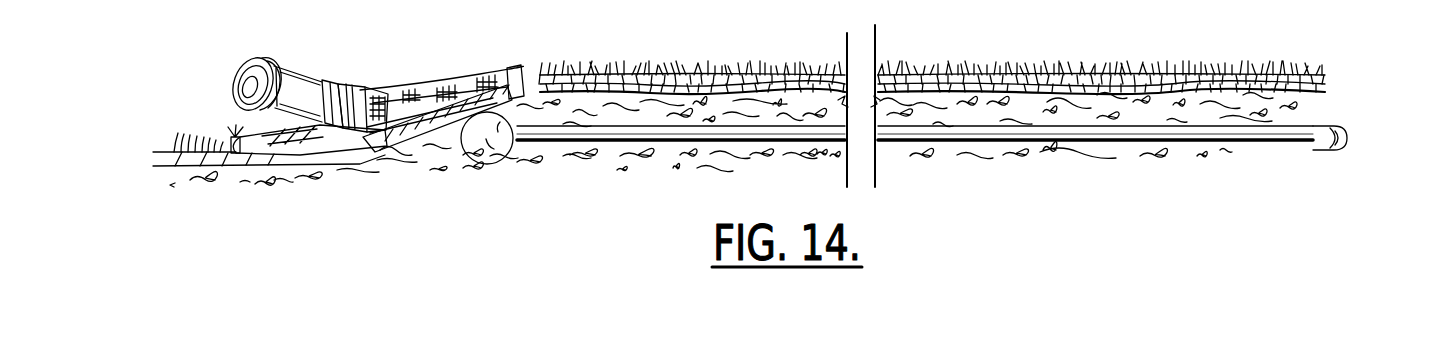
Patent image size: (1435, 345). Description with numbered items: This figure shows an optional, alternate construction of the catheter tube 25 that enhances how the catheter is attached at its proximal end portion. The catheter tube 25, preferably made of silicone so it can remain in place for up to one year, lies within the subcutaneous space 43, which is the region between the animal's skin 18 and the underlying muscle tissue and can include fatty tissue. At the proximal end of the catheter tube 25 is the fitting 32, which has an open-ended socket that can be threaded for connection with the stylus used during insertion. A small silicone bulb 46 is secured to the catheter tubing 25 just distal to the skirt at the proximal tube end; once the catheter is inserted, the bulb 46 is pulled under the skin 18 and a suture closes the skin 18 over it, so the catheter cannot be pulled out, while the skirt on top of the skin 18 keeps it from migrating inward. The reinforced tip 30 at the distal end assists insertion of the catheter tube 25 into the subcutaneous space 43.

The skin 18 is at (155, 160).
The fitting 32 is at (291, 78).
The silicone bulb 46 is at (484, 148).
The catheter tube 25 is at (908, 141).
The reinforced tip 30 is at (1347, 138).
The subcutaneous space 43 is at (1299, 99).